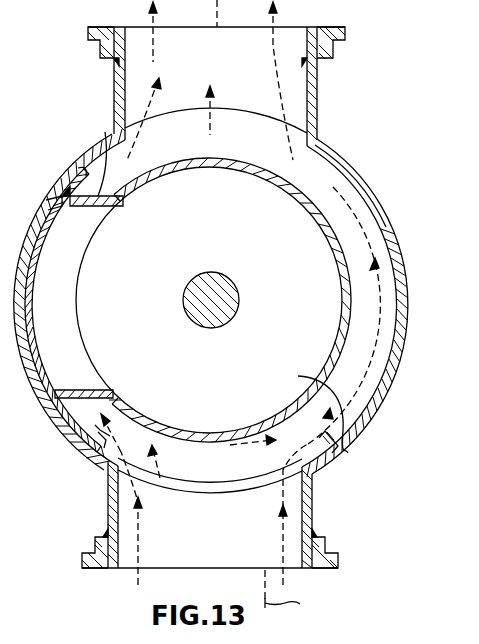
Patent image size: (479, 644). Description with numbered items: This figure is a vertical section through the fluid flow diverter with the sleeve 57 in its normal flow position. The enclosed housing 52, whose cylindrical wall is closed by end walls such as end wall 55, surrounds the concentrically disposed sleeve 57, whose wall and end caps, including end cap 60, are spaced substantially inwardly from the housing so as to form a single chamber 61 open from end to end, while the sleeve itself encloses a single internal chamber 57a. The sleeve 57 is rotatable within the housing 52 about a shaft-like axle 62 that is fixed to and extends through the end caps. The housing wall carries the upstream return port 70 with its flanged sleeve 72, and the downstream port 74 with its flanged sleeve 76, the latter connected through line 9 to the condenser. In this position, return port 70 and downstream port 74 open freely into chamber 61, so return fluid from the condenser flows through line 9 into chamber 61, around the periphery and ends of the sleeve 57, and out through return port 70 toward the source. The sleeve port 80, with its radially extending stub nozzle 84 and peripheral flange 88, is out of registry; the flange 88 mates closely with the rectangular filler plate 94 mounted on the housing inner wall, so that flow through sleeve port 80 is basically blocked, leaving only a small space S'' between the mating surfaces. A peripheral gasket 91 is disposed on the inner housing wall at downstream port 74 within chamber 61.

The housing 52 is at (360, 170).
The end wall 55 is at (322, 157).
The sleeve 57 is at (334, 216).
The internal chamber 57a is at (340, 449).
The end cap 60 is at (208, 377).
The chamber 61 is at (362, 401).
The axle 62 is at (232, 286).
The return port 70 is at (248, 55).
The flanged sleeve 72 is at (113, 88).
The downstream port 74 is at (268, 512).
The flanged sleeve 76 is at (107, 514).
The sleeve port 80 is at (68, 288).
The stub nozzle 84 is at (101, 135).
The peripheral flange 88 is at (78, 161).
The peripheral gasket 91 is at (95, 462).
The plate 94 is at (50, 204).
The line 9 is at (288, 595).
The space S'' is at (95, 499).